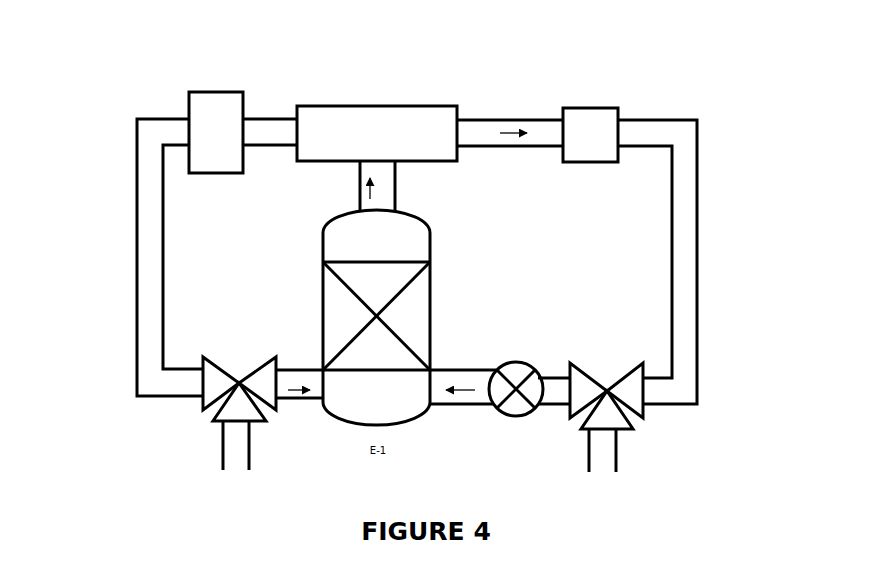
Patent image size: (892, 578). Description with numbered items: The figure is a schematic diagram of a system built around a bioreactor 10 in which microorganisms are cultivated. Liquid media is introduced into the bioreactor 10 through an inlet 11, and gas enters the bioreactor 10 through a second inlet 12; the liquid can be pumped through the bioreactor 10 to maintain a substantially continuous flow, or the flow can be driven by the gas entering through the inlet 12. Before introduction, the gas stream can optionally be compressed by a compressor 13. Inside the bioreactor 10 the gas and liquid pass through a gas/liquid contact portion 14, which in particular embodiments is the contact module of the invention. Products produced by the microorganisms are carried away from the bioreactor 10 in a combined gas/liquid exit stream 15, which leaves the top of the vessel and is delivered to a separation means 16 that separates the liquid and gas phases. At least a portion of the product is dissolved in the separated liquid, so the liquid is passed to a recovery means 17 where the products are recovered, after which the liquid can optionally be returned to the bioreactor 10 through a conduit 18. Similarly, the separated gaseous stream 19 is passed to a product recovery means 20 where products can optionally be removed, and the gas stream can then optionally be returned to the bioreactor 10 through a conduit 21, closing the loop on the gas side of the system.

The bioreactor 10 is at (432, 234).
The inlet 11 is at (295, 405).
The inlet 12 is at (455, 408).
The compressor 13 is at (512, 418).
The gas/liquid contact portion 14 is at (432, 296).
The combined gas/liquid exit stream 15 is at (372, 186).
The separation means 16 is at (364, 106).
The recovery means 17 is at (218, 92).
The conduit 18 is at (135, 293).
The gaseous stream 19 is at (500, 133).
The product recovery means 20 is at (606, 108).
The conduit 21 is at (699, 282).